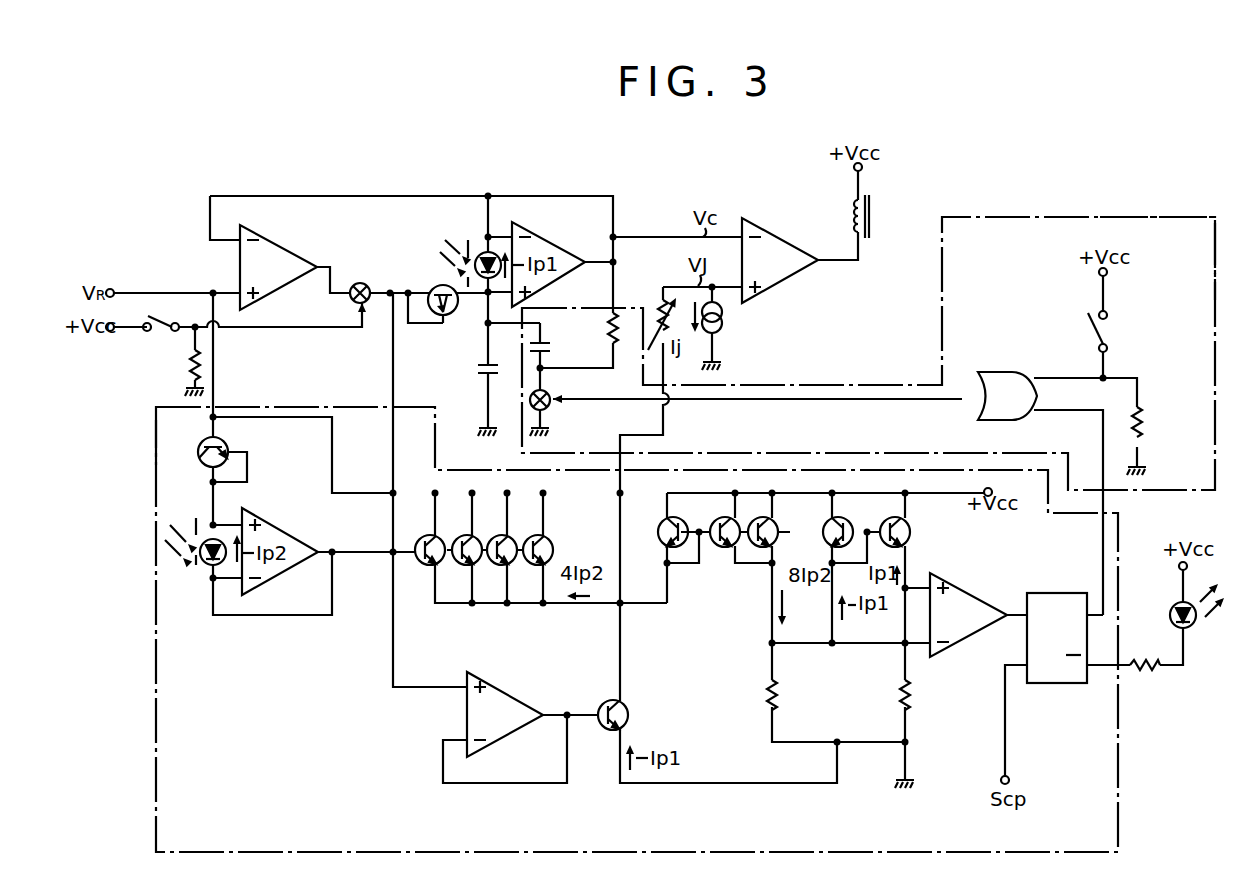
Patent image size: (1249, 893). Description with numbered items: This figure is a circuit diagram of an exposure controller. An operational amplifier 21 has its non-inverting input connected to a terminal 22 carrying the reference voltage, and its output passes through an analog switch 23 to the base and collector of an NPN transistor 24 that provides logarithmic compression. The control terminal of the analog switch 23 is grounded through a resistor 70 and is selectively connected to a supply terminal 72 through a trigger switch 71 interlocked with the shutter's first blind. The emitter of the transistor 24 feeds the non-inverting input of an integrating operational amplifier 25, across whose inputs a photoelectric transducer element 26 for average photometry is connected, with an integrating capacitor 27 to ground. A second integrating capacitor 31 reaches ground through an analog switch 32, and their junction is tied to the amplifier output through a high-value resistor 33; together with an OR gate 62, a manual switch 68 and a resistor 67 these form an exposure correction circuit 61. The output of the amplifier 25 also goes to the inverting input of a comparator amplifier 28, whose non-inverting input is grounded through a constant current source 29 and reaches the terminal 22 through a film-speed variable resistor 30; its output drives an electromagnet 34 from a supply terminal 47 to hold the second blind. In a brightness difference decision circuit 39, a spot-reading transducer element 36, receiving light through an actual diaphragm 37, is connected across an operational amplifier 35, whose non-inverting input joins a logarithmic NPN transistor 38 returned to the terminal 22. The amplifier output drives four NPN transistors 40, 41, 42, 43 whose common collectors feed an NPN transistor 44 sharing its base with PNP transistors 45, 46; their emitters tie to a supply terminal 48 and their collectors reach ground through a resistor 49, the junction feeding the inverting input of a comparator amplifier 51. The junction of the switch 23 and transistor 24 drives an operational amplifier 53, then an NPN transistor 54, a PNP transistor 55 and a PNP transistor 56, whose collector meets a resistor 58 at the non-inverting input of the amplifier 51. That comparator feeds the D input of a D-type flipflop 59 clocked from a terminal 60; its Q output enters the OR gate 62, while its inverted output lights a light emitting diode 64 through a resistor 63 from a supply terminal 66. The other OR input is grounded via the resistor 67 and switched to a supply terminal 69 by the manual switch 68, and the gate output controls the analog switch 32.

The operational amplifier 21 is at (277, 255).
The terminal 22 is at (113, 291).
The analog switch 23 is at (360, 283).
The NPN transistor 24 is at (453, 308).
The integrating operational amplifier 25 is at (552, 252).
The photoelectric transducer element 26 is at (478, 255).
The integrating capacitor 27 is at (476, 375).
The comparator operational amplifier 28 is at (781, 276).
The constant current source 29 is at (723, 318).
The variable resistor 30 is at (656, 312).
The second integrating capacitor 31 is at (551, 347).
The analog switch 32 is at (548, 408).
The resistor 33 is at (611, 327).
The electromagnet 34 is at (872, 215).
The operational amplifier 35 is at (285, 540).
The photoelectric transducer element 36 is at (222, 545).
The actual diaphragm 37 is at (460, 268).
The NPN transistor 38 is at (228, 446).
The brightness difference decision circuit 39 is at (156, 517).
The NPN transistor 40 is at (428, 566).
The NPN transistor 41 is at (466, 566).
The NPN transistor 42 is at (502, 566).
The NPN transistor 43 is at (538, 566).
The NPN transistor 44 is at (661, 526).
The PNP transistor 45 is at (728, 518).
The PNP transistor 46 is at (777, 528).
The terminal 47 is at (862, 170).
The terminal 48 is at (992, 490).
The resistor 49 is at (779, 696).
The operational amplifier 51 is at (963, 634).
The operational amplifier 53 is at (508, 700).
The NPN transistor 54 is at (628, 710).
The PNP transistor 55 is at (824, 538).
The PNP transistor 56 is at (910, 542).
The resistor 58 is at (912, 706).
The D-type flipflop 59 is at (1055, 683).
The terminal 60 is at (1009, 778).
The exposure correction circuit 61 is at (1123, 216).
The OR gate 62 is at (1014, 372).
The resistor 63 is at (1144, 670).
The light emitting diode 64 is at (1190, 628).
The terminal 66 is at (1179, 567).
The resistor 67 is at (1143, 424).
The manual switch 68 is at (1108, 342).
The terminal 69 is at (1107, 277).
The resistor 70 is at (190, 372).
The trigger switch 71 is at (162, 316).
The terminal 72 is at (110, 332).